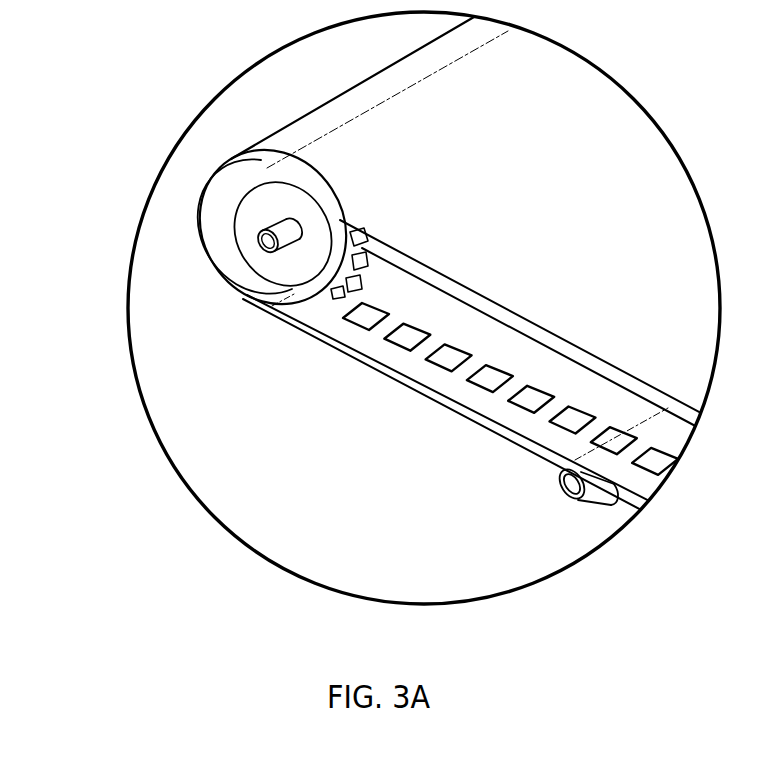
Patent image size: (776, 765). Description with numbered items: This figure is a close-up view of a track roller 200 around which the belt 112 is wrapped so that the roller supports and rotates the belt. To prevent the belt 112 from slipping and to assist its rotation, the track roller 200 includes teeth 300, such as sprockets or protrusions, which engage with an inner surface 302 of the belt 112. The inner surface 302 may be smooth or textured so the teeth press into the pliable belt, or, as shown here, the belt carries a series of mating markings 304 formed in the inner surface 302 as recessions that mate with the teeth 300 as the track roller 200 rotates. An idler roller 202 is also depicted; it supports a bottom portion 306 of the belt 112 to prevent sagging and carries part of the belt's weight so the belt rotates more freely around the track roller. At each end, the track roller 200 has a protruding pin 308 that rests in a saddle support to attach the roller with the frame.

The belt 112 is at (496, 302).
The track roller 200 is at (306, 284).
The idler roller 202 is at (600, 500).
The teeth 300 is at (353, 283).
The inner surface 302 is at (465, 393).
The mating markings 304 is at (571, 408).
The bottom portion 306 is at (418, 391).
The protruding pin 308 is at (265, 250).